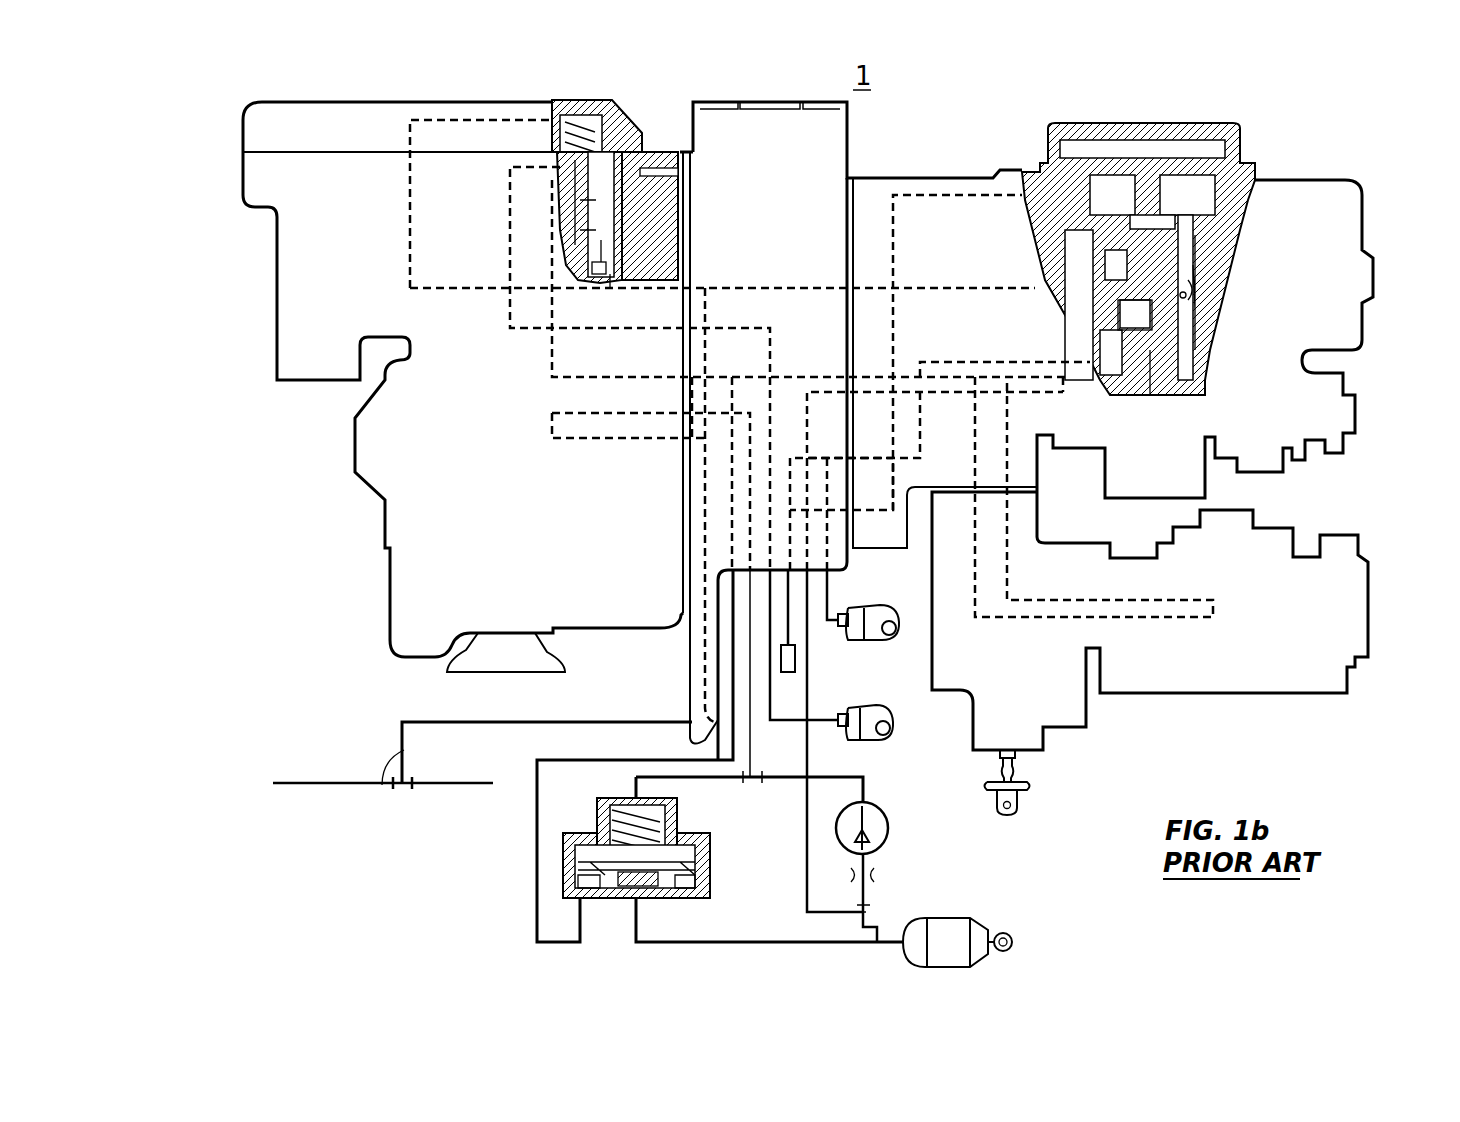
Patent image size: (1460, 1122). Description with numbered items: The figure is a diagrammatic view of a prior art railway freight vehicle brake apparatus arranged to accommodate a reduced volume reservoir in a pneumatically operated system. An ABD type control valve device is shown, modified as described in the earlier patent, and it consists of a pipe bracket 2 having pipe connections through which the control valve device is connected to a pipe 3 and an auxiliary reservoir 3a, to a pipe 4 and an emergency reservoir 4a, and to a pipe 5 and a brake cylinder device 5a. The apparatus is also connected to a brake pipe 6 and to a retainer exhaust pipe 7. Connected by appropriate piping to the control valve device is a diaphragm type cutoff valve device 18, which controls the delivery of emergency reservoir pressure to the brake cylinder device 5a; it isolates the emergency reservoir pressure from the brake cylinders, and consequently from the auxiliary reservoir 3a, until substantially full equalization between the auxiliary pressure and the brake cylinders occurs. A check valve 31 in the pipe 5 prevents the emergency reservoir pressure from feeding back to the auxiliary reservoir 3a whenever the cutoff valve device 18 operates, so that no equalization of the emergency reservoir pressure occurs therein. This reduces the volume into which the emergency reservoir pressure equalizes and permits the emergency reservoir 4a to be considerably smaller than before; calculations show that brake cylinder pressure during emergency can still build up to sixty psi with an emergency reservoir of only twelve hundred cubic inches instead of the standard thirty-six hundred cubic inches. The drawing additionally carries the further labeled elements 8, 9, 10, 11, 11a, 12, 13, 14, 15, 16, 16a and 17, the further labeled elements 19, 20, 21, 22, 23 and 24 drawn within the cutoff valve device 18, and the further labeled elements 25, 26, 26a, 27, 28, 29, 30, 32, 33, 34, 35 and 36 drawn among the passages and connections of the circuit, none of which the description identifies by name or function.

The pipe bracket 2 is at (852, 140).
The pipe 3 is at (832, 572).
The auxiliary reservoir 3a is at (872, 645).
The pipe 4 is at (773, 718).
The emergency reservoir 4a is at (870, 730).
The pipe 5 is at (765, 765).
The brake cylinder device 5a is at (940, 918).
The brake pipe 6 is at (404, 742).
The retainer exhaust pipe 7 is at (790, 575).
The clutch housing 8 is at (1362, 182).
The engine housing 9 is at (232, 130).
The clutch actuator 10 is at (1187, 165).
The hydraulic passage 11 is at (712, 296).
The passage section 11a is at (578, 108).
The valve region 12 is at (1030, 216).
The piston 13 is at (1060, 305).
The valve block 14 is at (625, 168).
The valve cover 15 is at (608, 115).
The valve seat 16 is at (590, 282).
The valve port 16a is at (612, 283).
The control valve 17 is at (575, 200).
The diaphragm type cutoff valve device 18 is at (628, 793).
The valve piston 19 is at (652, 886).
The valve plate 20 is at (700, 857).
The spring 21 is at (660, 815).
The valve housing 22 is at (580, 852).
The valve chamber 23 is at (690, 885).
The valve chamber 24 is at (617, 888).
The pressure passage 25 is at (510, 210).
The return passage 26 is at (555, 178).
The return passage branch 26a is at (718, 655).
The supply passage 27 is at (718, 777).
The pump line 28 is at (745, 942).
The pressure line 29 is at (818, 590).
The passage 30 is at (825, 398).
The check valve 31 is at (888, 812).
The throttle 32 is at (874, 875).
The passage 33 is at (1080, 348).
The passage 34 is at (1148, 395).
The passage 35 is at (676, 468).
The passage 36 is at (960, 358).